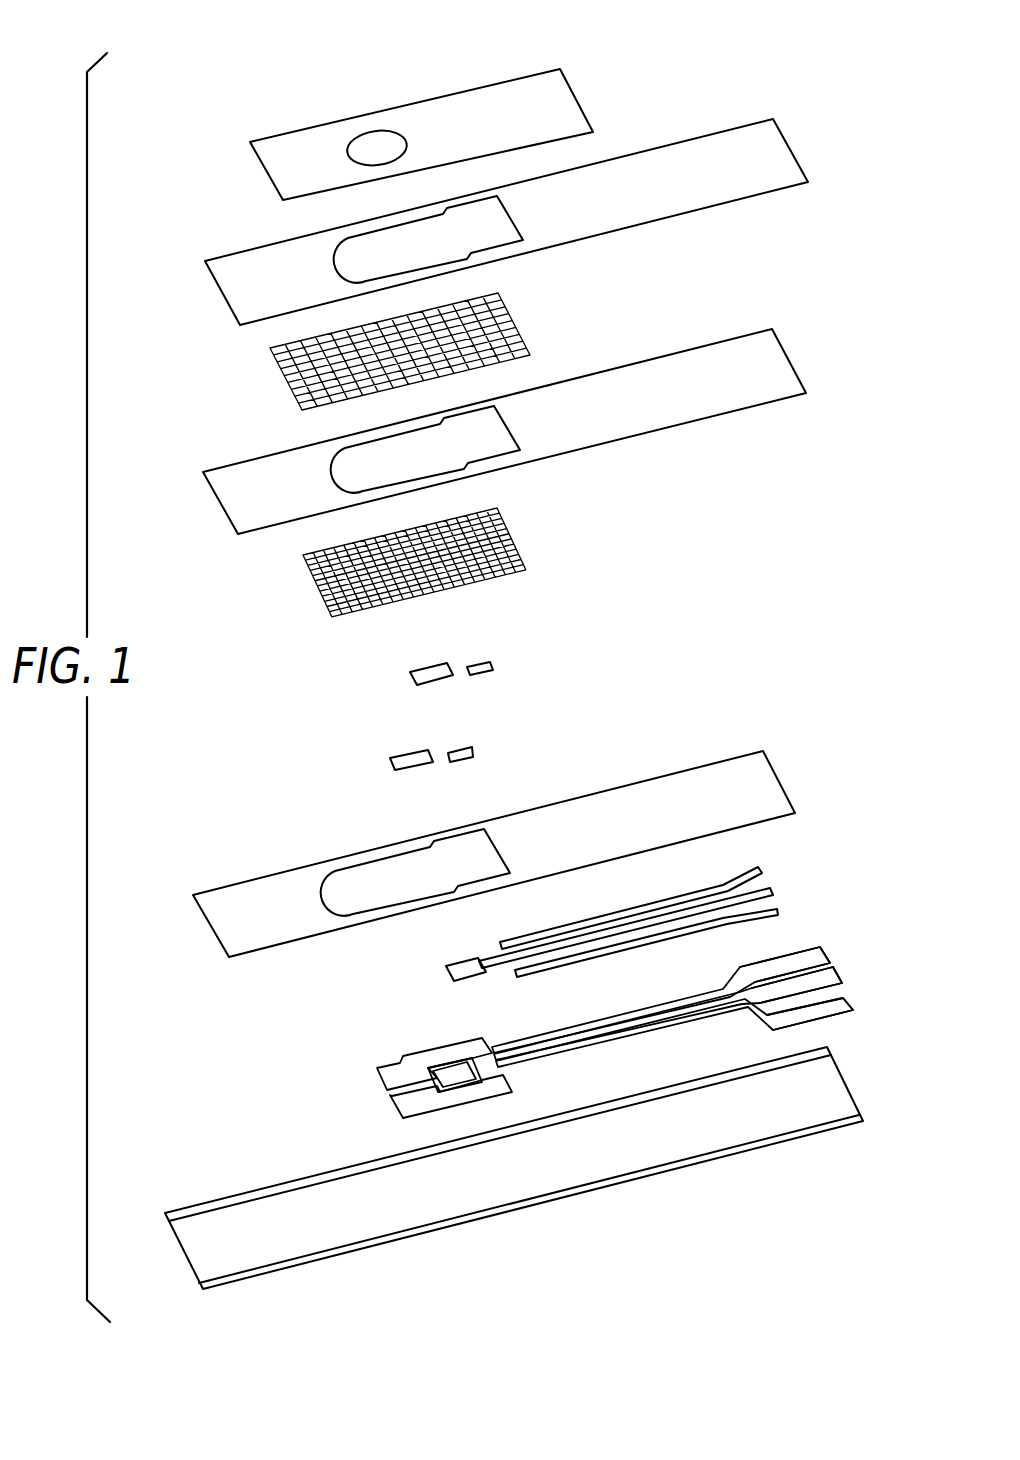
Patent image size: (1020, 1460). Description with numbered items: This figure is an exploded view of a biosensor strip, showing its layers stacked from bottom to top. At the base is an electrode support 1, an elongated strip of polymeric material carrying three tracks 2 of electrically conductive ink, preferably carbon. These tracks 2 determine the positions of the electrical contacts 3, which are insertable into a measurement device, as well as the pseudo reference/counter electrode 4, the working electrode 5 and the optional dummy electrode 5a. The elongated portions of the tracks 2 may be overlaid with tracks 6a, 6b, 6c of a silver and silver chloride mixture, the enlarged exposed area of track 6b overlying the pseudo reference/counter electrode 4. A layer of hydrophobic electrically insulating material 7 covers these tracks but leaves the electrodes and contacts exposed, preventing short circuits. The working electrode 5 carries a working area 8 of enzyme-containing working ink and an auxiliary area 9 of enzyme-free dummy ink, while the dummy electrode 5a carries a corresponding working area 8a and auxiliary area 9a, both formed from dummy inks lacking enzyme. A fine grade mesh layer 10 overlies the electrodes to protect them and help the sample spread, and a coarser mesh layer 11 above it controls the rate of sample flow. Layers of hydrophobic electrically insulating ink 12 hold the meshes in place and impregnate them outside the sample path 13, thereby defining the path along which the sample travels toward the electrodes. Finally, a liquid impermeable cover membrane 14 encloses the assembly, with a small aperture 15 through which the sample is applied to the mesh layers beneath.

The electrode support 1 is at (832, 1087).
The tracks 2 is at (625, 1030).
The electrical contacts 3 is at (820, 955).
The pseudo reference/counter electrode 4 is at (452, 1075).
The working electrode 5 is at (390, 1078).
The dummy electrode 5a is at (390, 1108).
The track of conductive material 6a is at (760, 867).
The track of conductive material 6b is at (443, 975).
The track of conductive material 6c is at (784, 913).
The hydrophobic electrically insulating material 7 is at (775, 773).
The working area 8 is at (405, 681).
The working area 8a is at (387, 763).
The auxiliary area 9 is at (495, 662).
The auxiliary area 9a is at (477, 747).
The fine grade mesh layer 10 is at (520, 543).
The coarse grade mesh layer 11 is at (528, 340).
The hydrophobic electrically insulating ink 12 is at (793, 147).
The sample path 13 is at (347, 260).
The liquid impermeable cover membrane 14 is at (513, 93).
The aperture 15 is at (370, 137).